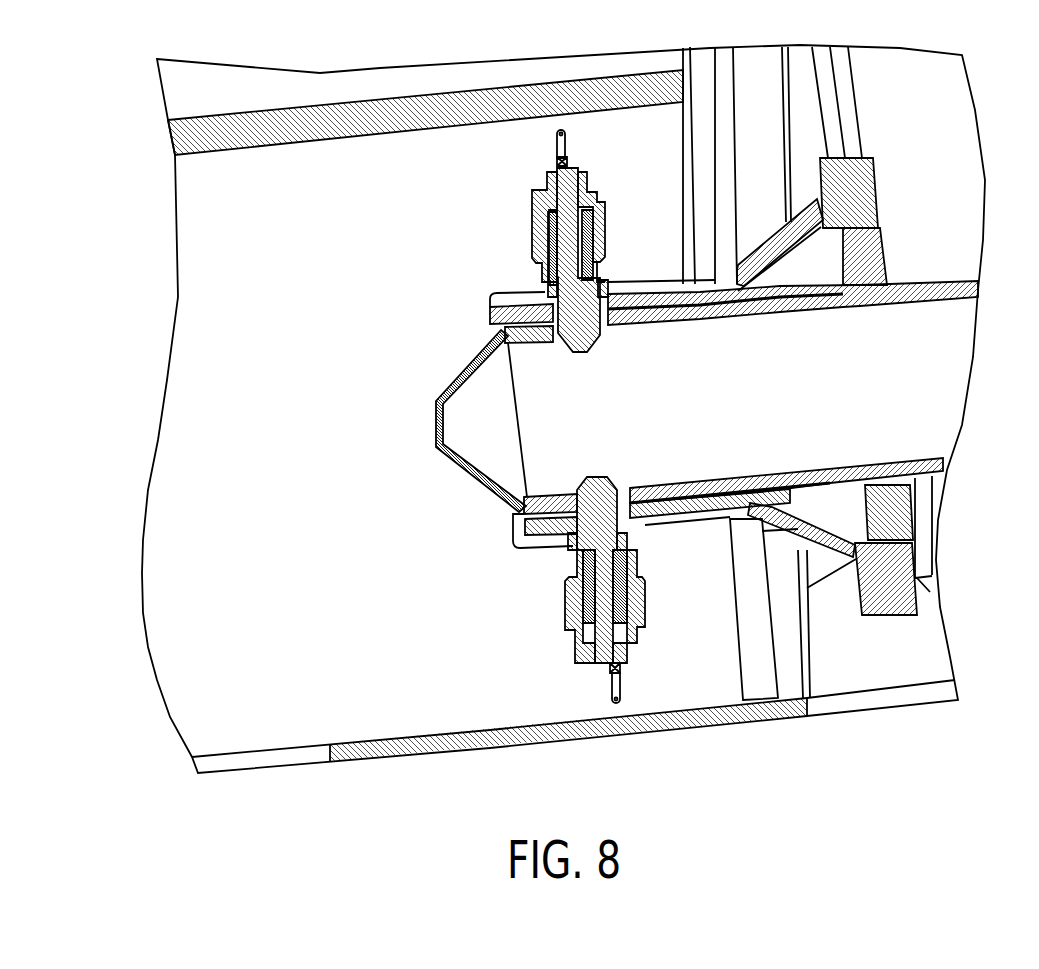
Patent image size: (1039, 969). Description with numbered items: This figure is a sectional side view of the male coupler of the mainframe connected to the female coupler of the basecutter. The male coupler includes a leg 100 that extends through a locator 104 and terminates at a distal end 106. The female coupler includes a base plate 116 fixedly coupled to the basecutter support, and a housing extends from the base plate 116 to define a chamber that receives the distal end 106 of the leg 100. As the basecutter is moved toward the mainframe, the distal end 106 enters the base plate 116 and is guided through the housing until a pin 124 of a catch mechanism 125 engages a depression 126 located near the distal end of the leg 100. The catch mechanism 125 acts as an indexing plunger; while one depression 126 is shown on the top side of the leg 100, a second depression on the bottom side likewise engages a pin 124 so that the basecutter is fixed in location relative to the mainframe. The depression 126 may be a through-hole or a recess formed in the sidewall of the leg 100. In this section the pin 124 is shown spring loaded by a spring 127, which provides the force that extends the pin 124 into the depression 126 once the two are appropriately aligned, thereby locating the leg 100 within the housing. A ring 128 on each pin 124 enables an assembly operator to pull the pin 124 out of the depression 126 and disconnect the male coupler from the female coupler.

The leg 100 is at (940, 338).
The locator 104 is at (872, 260).
The distal end 106 is at (437, 436).
The base plate 116 is at (863, 197).
The pin 124 is at (560, 190).
The catch mechanism 125 is at (510, 247).
The depression 126 is at (548, 342).
The spring 127 is at (593, 243).
The ring 128 is at (567, 147).